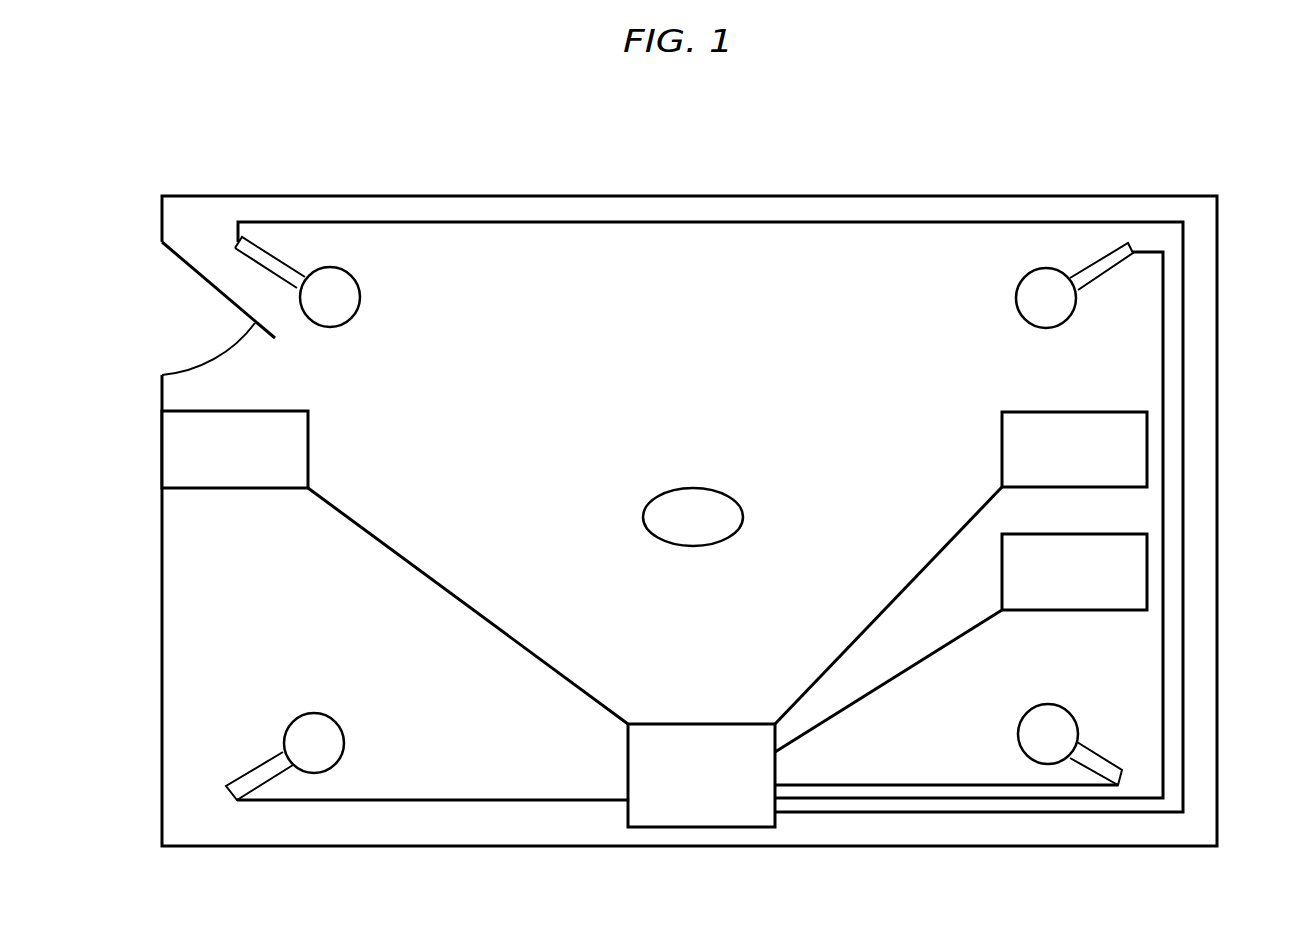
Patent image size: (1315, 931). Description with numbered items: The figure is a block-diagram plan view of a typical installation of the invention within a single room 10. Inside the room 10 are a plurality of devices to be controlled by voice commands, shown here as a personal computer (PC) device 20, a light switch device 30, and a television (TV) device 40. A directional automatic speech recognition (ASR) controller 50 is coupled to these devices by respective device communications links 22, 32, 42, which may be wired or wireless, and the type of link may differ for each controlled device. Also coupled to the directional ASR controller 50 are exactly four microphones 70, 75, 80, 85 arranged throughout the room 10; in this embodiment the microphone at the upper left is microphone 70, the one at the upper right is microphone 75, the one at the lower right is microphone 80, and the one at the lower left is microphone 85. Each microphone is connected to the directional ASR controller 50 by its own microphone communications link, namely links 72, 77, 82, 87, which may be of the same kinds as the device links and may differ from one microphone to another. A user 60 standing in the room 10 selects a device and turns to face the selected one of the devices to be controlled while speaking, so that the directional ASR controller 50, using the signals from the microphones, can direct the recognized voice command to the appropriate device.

The room 10 is at (1217, 283).
The personal computer (PC) device 20 is at (1002, 428).
The device communications link 22 is at (950, 538).
The light switch device 30 is at (309, 440).
The device communications link 32 is at (468, 600).
The television (TV) device 40 is at (1090, 610).
The device communications link 42 is at (935, 653).
The directional automatic speech recognition (ASR) controller 50 is at (628, 750).
The user 60 is at (744, 518).
The microphone 70 is at (358, 280).
The microphone communications link 72 is at (487, 222).
The microphone 75 is at (1015, 296).
The microphone communications link 77 is at (1163, 318).
The microphone 80 is at (1020, 718).
The microphone communications link 82 is at (937, 785).
The microphone 85 is at (345, 733).
The microphone communications link 87 is at (430, 800).